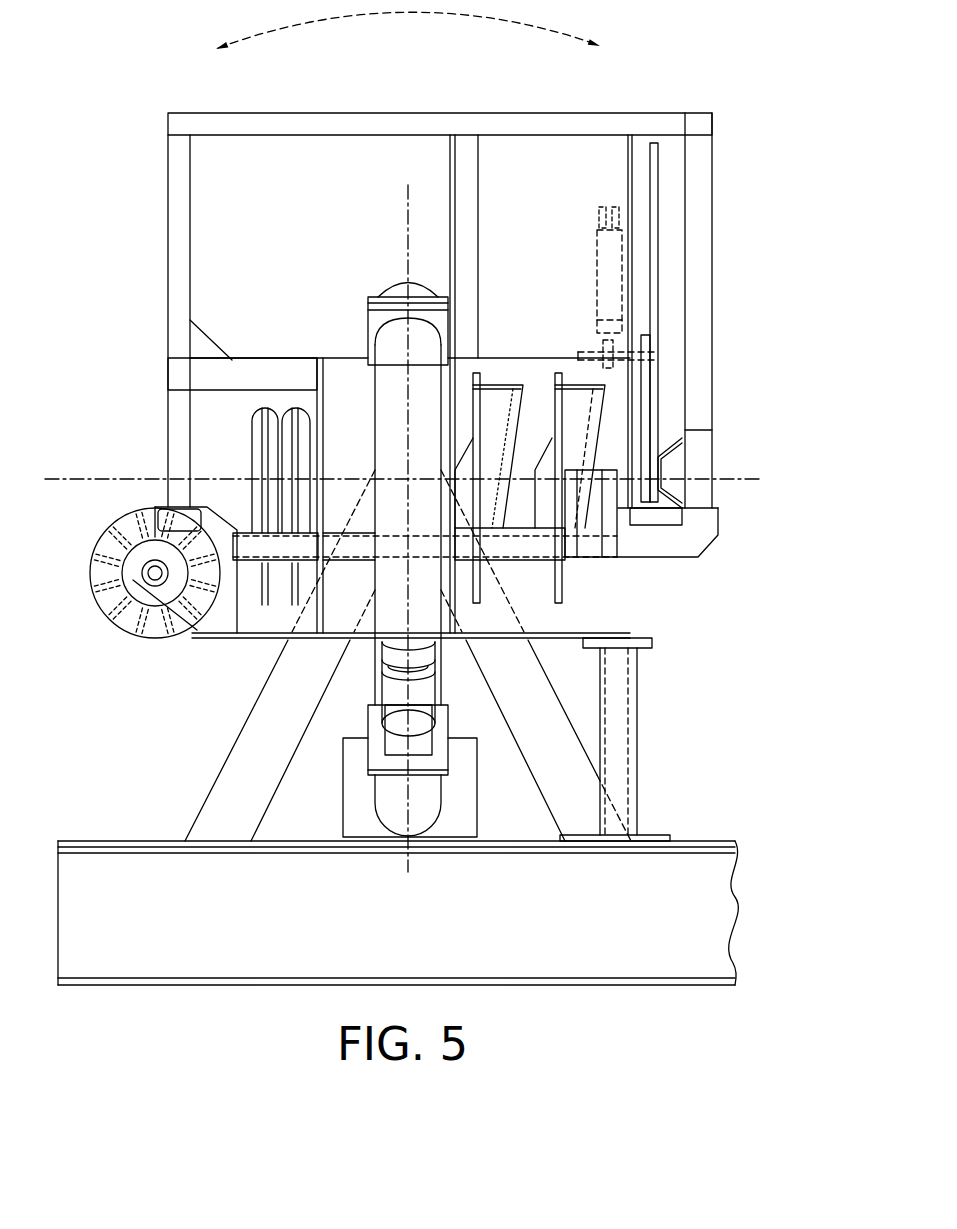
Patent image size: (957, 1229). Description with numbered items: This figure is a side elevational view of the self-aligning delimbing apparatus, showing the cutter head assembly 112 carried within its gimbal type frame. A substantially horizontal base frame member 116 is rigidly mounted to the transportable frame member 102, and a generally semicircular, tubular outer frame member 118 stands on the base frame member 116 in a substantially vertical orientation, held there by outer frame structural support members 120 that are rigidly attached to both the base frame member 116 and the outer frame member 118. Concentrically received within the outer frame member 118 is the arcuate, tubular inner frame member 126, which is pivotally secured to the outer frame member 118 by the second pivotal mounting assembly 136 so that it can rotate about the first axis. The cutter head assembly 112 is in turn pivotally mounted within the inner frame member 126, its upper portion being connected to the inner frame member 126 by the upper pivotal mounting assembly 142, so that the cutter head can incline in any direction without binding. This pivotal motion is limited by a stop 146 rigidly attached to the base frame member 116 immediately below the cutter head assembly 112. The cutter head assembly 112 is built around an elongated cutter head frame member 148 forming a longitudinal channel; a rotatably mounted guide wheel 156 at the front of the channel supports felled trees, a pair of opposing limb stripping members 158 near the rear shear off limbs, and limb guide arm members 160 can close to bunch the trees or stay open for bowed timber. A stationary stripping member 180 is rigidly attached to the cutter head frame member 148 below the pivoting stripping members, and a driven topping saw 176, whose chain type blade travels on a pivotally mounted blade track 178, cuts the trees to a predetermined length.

The transportable frame member 102 is at (717, 912).
The cutter head assembly 112 is at (762, 422).
The horizontal base frame member 116 is at (168, 840).
The outer frame member 118 is at (445, 806).
The outer frame structural support members 120 is at (248, 757).
The inner frame member 126 is at (372, 403).
The second pivotal mounting assembly 136 is at (395, 697).
The upper pivotal mounting assembly 142 is at (401, 292).
The stop 146 is at (613, 705).
The cutter head frame member 148 is at (178, 377).
The guide wheel 156 is at (105, 606).
The limb stripping members 158 is at (573, 397).
The limb guide arm members 160 is at (296, 398).
The topping saw 176 is at (653, 235).
The blade track 178 is at (578, 122).
The stationary stripping member 180 is at (617, 542).